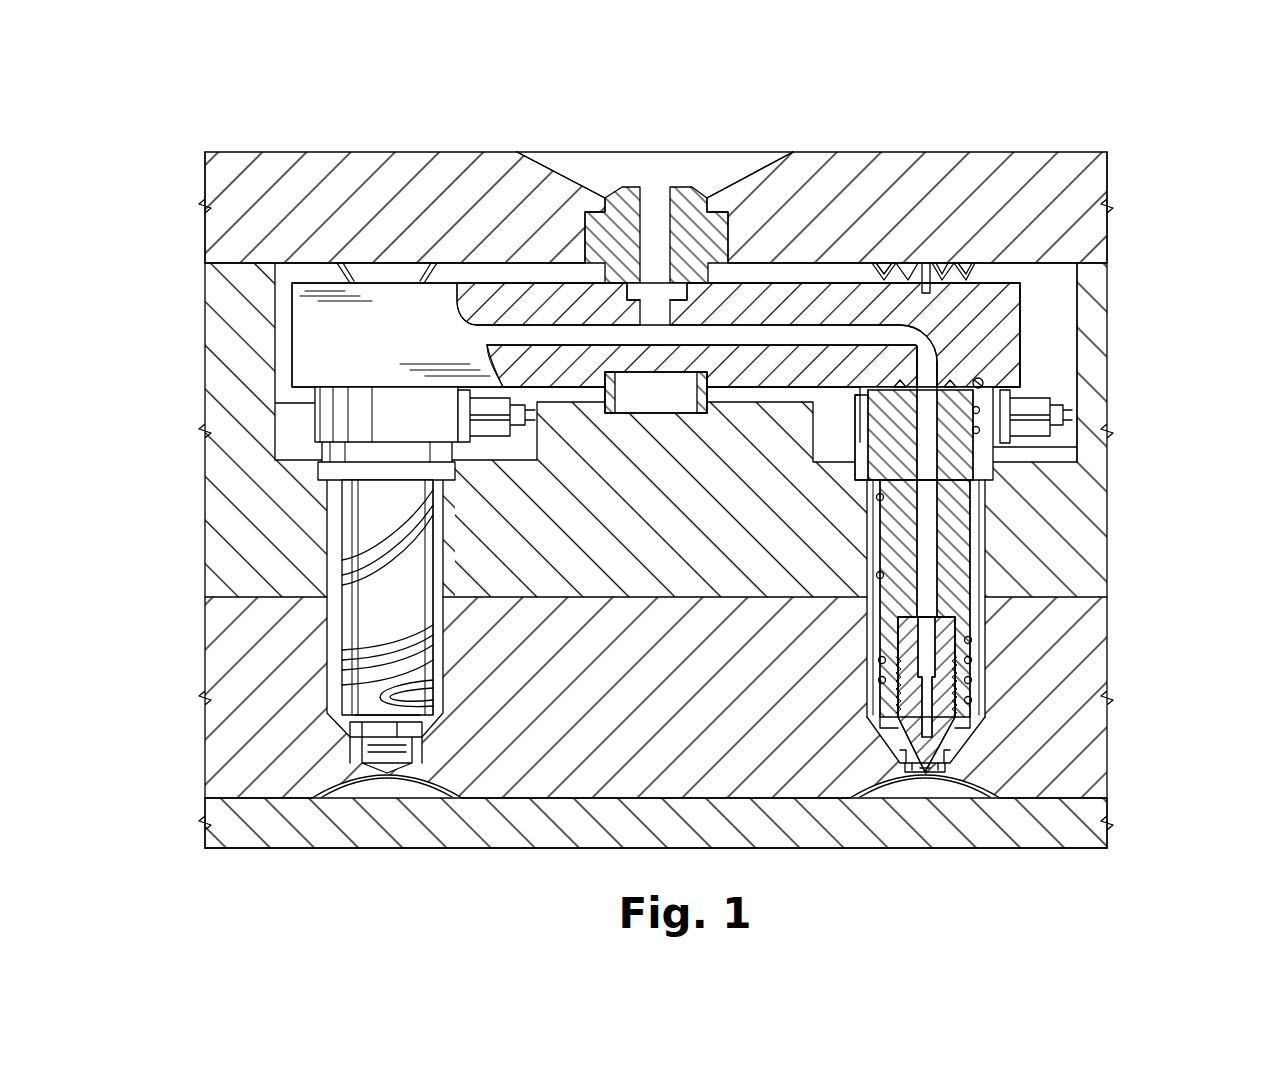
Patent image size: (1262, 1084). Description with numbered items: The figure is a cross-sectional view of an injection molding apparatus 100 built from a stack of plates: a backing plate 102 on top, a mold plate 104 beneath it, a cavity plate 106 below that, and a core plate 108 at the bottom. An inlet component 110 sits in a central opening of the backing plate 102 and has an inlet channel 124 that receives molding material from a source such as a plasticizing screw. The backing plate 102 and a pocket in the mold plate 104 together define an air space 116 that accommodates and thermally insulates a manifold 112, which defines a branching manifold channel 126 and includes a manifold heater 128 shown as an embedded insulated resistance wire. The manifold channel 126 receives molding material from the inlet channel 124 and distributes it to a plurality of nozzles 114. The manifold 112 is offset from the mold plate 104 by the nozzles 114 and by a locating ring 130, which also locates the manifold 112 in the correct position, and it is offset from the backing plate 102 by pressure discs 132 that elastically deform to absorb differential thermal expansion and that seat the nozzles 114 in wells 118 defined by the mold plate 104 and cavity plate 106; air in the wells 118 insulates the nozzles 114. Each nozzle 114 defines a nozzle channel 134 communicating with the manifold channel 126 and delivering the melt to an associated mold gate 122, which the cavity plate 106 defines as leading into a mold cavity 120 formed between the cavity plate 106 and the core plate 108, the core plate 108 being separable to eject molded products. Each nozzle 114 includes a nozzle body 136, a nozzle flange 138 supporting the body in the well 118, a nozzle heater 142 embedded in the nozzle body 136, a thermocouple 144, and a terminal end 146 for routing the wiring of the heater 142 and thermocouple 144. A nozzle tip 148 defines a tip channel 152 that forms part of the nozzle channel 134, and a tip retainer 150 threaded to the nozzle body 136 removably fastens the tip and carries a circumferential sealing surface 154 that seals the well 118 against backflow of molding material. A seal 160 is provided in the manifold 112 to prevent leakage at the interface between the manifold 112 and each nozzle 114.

The injection molding apparatus 100 is at (1140, 138).
The backing plate 102 is at (1110, 178).
The mold plate 104 is at (1110, 347).
The cavity plate 106 is at (1110, 648).
The core plate 108 is at (1110, 810).
The inlet component 110 is at (620, 186).
The manifold 112 is at (1022, 312).
The nozzles 114 is at (335, 551).
The air space 116 is at (1028, 355).
The wells 118 is at (870, 568).
The mold cavities 120 is at (965, 786).
The mold gates 122 is at (925, 776).
The inlet channel 124 is at (652, 198).
The manifold channel 126 is at (893, 333).
The manifold heater 128 is at (985, 384).
The locating ring 130 is at (682, 400).
The pressure discs 132 is at (978, 277).
The nozzle channel 134 is at (932, 515).
The nozzle body 136 is at (955, 595).
The nozzle flange 138 is at (855, 448).
The nozzle heater 142 is at (968, 646).
The thermocouple 144 is at (978, 726).
The terminal end 146 is at (1030, 434).
The nozzle tip 148 is at (980, 782).
The tip retainer 150 is at (978, 740).
The tip channel 152 is at (922, 650).
The circumferential sealing surface 154 is at (900, 755).
The seal 160 is at (905, 386).